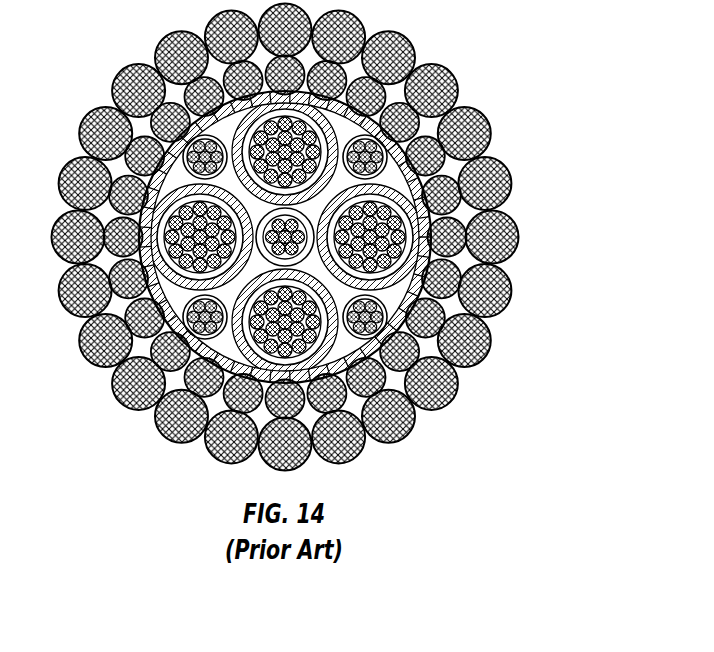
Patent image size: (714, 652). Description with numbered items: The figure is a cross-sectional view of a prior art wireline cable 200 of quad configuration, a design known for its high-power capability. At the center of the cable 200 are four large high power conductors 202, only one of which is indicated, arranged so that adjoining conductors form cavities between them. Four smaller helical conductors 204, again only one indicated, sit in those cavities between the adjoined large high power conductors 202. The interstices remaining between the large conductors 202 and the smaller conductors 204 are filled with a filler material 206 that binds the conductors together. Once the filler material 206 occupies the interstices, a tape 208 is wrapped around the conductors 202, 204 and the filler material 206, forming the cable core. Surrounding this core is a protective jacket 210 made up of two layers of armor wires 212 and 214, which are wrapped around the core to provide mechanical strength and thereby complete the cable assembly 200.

The wireline cable 200 is at (505, 40).
The large high power conductor 202 is at (424, 241).
The smaller helical conductor 204 is at (410, 323).
The filler material 206 is at (436, 180).
The tape 208 is at (462, 272).
The protective jacket 210 is at (488, 127).
The armor wires 212 is at (407, 437).
The armor wires 214 is at (457, 395).